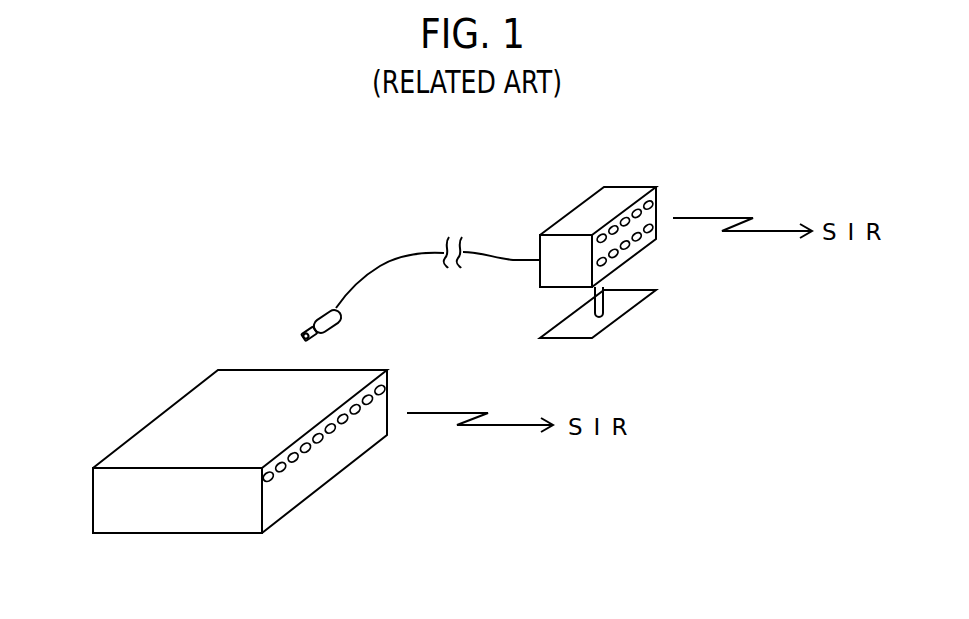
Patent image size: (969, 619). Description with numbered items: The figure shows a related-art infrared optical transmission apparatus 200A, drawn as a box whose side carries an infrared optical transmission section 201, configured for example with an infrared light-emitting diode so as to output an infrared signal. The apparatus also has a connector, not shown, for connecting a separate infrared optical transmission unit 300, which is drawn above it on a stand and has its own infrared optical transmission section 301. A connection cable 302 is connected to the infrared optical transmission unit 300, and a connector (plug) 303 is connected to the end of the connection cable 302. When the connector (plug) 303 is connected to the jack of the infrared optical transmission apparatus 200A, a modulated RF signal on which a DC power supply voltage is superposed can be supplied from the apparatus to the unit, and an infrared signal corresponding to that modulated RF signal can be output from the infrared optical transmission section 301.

The infrared optical transmission apparatus 200A is at (100, 502).
The infrared optical transmission section 201 is at (317, 442).
The infrared optical transmission unit 300 is at (618, 193).
The infrared optical transmission section 301 is at (650, 218).
The connection cable 302 is at (407, 253).
The connector (plug) 303 is at (322, 309).